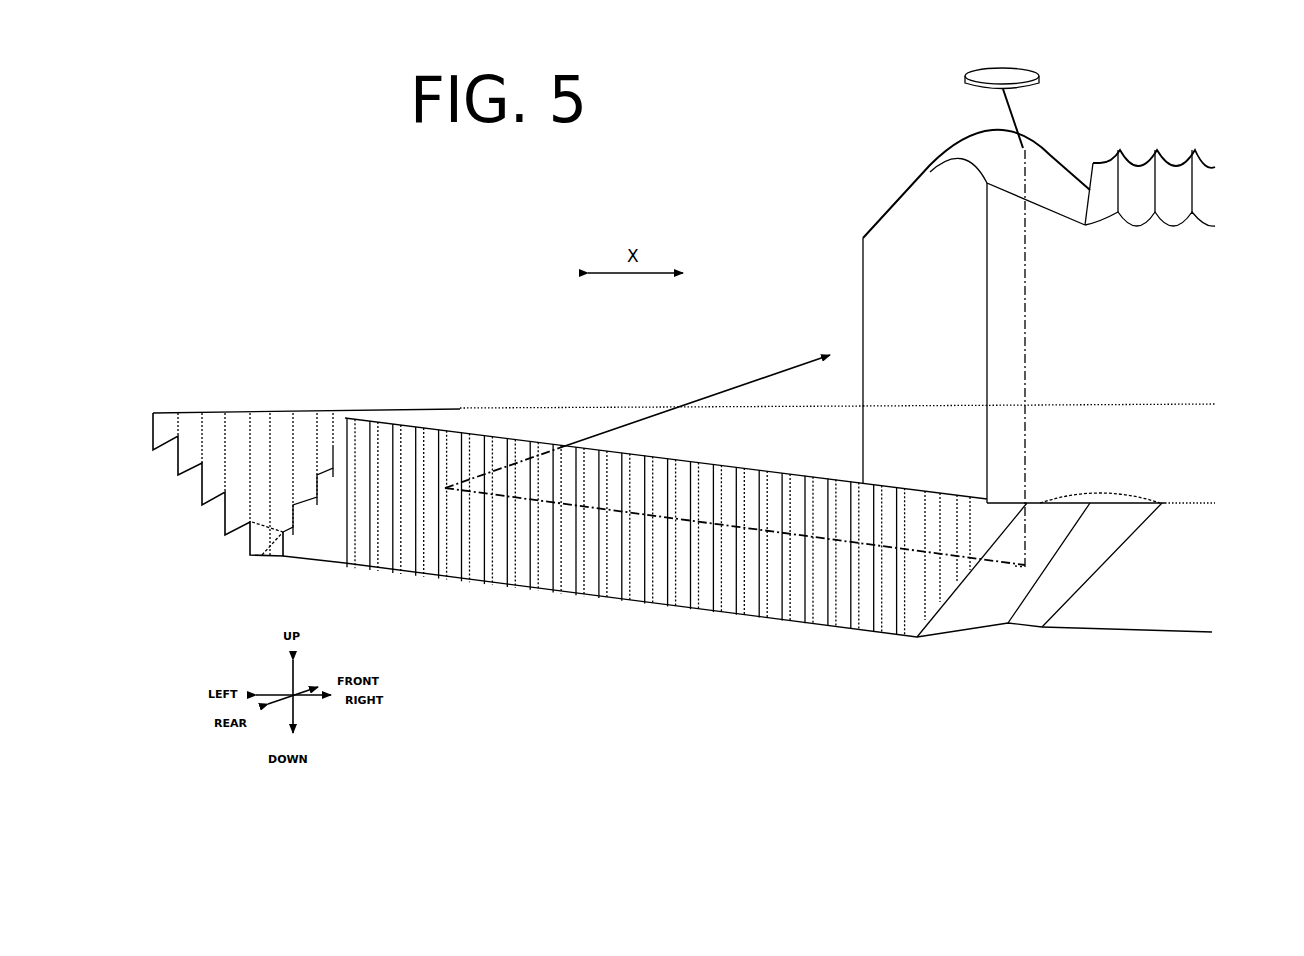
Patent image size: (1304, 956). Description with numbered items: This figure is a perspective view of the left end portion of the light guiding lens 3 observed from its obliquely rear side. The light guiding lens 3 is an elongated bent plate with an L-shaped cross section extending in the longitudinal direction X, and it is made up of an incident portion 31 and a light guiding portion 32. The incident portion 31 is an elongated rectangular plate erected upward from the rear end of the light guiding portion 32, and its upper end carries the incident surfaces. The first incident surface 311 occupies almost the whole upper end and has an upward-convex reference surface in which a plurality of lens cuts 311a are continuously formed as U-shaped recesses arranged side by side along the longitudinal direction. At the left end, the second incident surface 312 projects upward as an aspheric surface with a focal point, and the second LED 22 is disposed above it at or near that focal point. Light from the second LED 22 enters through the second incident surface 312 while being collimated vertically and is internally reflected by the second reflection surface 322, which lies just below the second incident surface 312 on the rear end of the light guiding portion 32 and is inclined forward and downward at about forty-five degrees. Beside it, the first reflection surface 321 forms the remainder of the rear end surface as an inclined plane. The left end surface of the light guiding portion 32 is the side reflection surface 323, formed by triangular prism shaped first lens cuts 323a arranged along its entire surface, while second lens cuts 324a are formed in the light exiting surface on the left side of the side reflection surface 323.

The light guiding lens 3 is at (397, 320).
The second LED 22 is at (1018, 68).
The incident portion 31 is at (862, 269).
The second incident surface 312 is at (973, 150).
The first incident surface 311 is at (1200, 175).
The lens cuts 311a is at (1175, 175).
The light guiding portion 32 is at (558, 423).
The first reflection surface 321 is at (1132, 610).
The second reflection surface 322 is at (968, 604).
The side reflection surface 323 is at (502, 553).
The first lens cuts 323a is at (678, 580).
The second lens cuts 324a is at (340, 410).